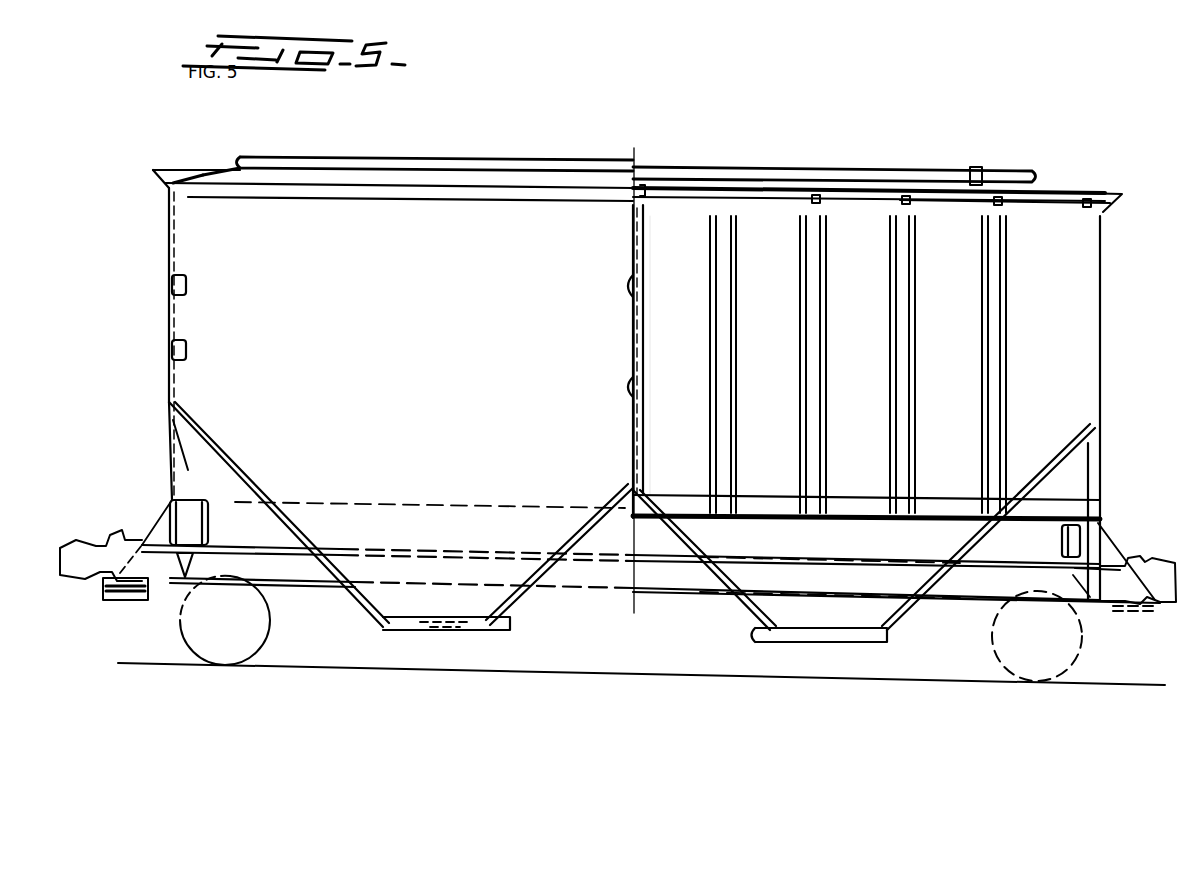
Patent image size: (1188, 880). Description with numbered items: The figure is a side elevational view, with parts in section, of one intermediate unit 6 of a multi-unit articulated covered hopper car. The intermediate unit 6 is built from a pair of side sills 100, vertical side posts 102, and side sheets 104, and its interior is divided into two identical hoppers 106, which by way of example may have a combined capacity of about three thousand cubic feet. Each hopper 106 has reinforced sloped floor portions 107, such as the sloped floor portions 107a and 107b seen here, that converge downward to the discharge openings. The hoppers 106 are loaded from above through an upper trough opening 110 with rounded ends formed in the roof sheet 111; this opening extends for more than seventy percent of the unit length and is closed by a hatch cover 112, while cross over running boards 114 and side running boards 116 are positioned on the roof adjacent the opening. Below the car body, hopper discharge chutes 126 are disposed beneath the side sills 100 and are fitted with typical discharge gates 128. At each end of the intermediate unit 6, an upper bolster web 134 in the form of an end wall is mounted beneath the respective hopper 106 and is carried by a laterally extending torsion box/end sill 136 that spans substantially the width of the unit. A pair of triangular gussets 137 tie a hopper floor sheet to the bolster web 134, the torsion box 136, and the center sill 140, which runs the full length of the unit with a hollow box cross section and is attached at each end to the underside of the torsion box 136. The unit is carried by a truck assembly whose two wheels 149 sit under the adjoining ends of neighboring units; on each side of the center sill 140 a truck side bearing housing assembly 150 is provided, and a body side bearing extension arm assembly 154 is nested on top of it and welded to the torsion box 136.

The intermediate unit 6 is at (1047, 186).
The side sills 100 is at (938, 514).
The side posts 102 is at (815, 318).
The side sheets 104 is at (784, 308).
The hoppers 106 is at (404, 293).
The reinforced sloped floor portions 107 is at (688, 546).
The reinforced sloped floor portion 107a is at (610, 506).
The reinforced sloped floor portion 107b is at (253, 492).
The upper trough opening 110 is at (553, 170).
The roof sheet 111 is at (228, 170).
The hatch cover 112 is at (823, 172).
The cross over running boards 114 is at (1093, 192).
The side running boards 116 is at (685, 192).
The hopper discharge chutes 126 is at (490, 624).
The discharge gates 128 is at (440, 634).
The upper bolster web 134 is at (168, 430).
The triangular gussets 137 is at (188, 470).
The torsion box/end sill 136 is at (180, 516).
The center sill 140 is at (1000, 584).
The wheels 149 is at (263, 612).
The truck side bearing housing assembly 150 is at (130, 601).
The body side bearing extension arm assembly 154 is at (1118, 588).